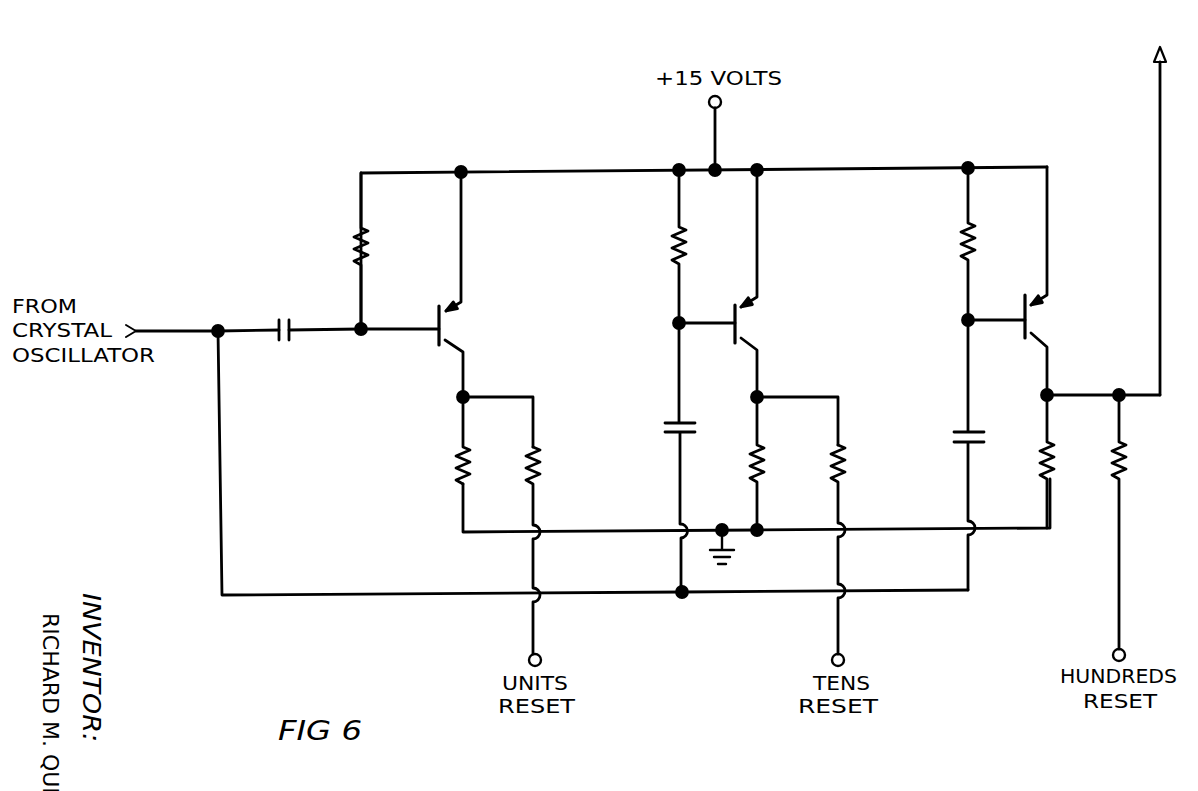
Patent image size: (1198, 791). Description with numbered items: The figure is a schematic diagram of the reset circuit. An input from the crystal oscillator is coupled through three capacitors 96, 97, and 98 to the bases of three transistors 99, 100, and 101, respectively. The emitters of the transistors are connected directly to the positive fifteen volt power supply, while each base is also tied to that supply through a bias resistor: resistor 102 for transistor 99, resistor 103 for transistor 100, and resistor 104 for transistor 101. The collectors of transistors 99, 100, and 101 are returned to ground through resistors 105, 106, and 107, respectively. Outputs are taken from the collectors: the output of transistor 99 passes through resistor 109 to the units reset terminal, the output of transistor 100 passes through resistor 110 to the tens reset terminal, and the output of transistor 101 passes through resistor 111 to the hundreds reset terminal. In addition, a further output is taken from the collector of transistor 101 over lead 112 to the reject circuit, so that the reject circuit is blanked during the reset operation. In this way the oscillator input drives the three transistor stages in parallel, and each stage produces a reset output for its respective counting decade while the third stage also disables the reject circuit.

The capacitor 96 is at (297, 342).
The capacitor 97 is at (672, 440).
The capacitor 98 is at (962, 450).
The transistor 99 is at (455, 323).
The transistor 100 is at (752, 328).
The transistor 101 is at (1043, 332).
The resistor 102 is at (372, 253).
The resistor 103 is at (665, 247).
The resistor 104 is at (982, 232).
The resistor 105 is at (447, 473).
The resistor 106 is at (777, 462).
The resistor 107 is at (1062, 468).
The resistor 109 is at (547, 475).
The resistor 110 is at (853, 463).
The resistor 111 is at (1130, 468).
The lead 112 is at (1153, 85).